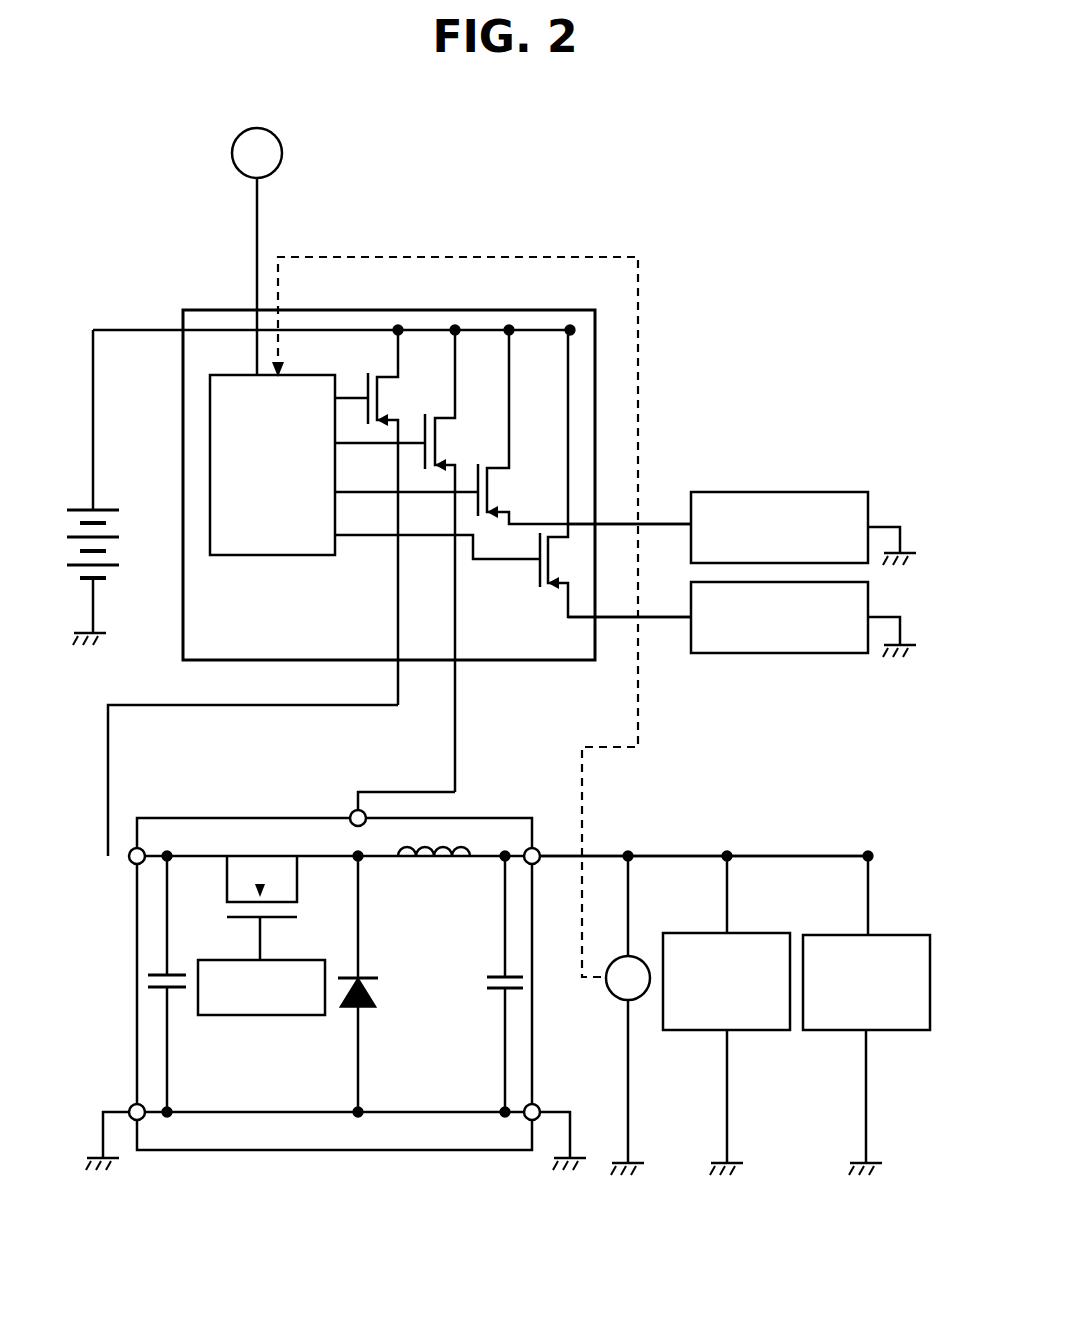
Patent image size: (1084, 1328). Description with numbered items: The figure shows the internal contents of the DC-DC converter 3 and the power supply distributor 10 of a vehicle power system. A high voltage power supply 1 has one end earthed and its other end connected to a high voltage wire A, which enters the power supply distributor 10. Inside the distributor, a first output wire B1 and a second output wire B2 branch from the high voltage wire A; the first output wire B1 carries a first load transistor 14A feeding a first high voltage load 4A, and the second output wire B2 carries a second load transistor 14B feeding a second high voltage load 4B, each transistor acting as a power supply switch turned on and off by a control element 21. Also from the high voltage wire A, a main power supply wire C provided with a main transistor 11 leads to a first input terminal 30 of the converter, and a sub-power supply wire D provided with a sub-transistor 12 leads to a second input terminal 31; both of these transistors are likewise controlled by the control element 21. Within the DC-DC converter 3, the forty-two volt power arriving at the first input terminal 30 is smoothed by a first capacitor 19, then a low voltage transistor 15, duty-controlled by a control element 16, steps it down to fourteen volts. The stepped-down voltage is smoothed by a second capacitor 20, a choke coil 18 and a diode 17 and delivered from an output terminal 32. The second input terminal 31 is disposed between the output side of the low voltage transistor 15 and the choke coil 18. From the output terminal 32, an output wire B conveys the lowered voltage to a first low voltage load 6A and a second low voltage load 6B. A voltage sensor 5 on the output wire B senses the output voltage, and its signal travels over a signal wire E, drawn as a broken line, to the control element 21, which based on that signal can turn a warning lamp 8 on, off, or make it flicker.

The high voltage power supply 1 is at (120, 520).
The DC-DC converter 3 is at (440, 1150).
The first high voltage load 4A is at (776, 492).
The second high voltage load 4B is at (788, 653).
The voltage sensor 5 is at (608, 995).
The first low voltage load 6A is at (737, 1030).
The second low voltage load 6B is at (878, 1030).
The warning lamp 8 is at (283, 153).
The power supply distributor 10 is at (205, 310).
The main transistor 11 is at (400, 392).
The sub-transistor 12 is at (455, 432).
The first load transistor 14A is at (507, 480).
The second load transistor 14B is at (572, 548).
The low voltage transistor 15 is at (245, 895).
The control element 16 is at (268, 1015).
The diode 17 is at (368, 1003).
The choke coil 18 is at (432, 880).
The first capacitor 19 is at (158, 992).
The second capacitor 20 is at (493, 995).
The control element 21 is at (278, 555).
The first input terminal 30 is at (130, 866).
The second input terminal 31 is at (352, 810).
The output terminal 32 is at (538, 848).
The high voltage wire A is at (130, 330).
The output wire B is at (612, 856).
The first output wire B1 is at (666, 524).
The second output wire B2 is at (668, 620).
The main power supply wire C is at (153, 705).
The sub-power supply wire D is at (455, 700).
The signal wire E is at (622, 257).